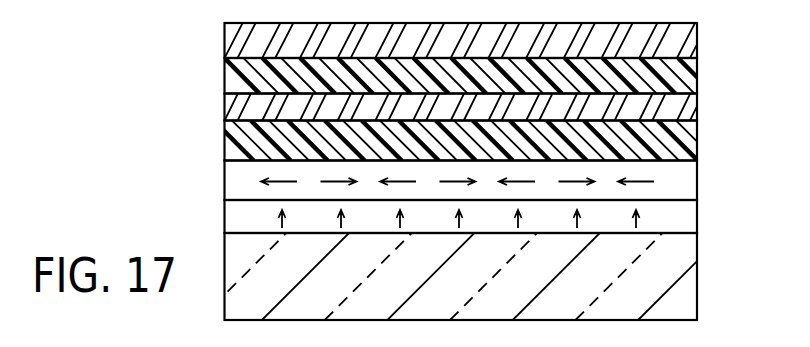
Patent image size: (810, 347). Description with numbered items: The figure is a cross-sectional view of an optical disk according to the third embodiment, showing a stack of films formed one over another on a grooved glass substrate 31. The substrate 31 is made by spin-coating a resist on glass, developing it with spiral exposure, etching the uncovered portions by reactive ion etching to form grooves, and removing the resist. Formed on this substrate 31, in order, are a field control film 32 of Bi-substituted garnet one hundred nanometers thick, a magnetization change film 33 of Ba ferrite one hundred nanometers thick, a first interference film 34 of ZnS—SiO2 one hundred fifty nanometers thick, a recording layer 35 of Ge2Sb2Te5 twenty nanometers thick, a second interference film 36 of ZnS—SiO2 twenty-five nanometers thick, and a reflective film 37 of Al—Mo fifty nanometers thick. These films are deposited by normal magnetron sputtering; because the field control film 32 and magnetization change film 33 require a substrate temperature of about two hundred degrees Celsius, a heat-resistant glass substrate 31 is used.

The glass substrate 31 is at (697, 297).
The field control film 32 is at (697, 225).
The magnetization change film 33 is at (697, 183).
The first interference film 34 is at (697, 144).
The recording layer 35 is at (697, 110).
The second interference film 36 is at (697, 82).
The reflective film 37 is at (697, 42).